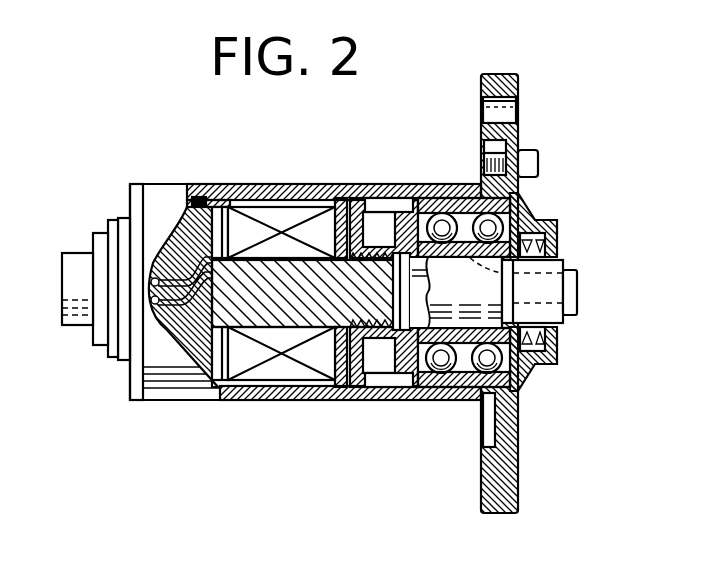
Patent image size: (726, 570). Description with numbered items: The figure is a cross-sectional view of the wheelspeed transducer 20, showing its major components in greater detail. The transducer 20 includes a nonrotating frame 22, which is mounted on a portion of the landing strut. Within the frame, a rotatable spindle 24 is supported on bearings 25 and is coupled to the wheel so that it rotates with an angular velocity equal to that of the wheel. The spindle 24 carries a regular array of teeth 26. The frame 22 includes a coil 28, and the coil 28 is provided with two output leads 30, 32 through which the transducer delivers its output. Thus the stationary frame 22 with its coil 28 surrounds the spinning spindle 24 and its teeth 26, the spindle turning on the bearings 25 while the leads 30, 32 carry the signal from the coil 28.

The wheelspeed transducer 20 is at (274, 166).
The nonrotating frame 22 is at (342, 183).
The rotatable spindle 24 is at (578, 293).
The bearings 25 is at (487, 360).
The teeth 26 is at (406, 190).
The coil 28 is at (283, 365).
The output lead 30 is at (162, 252).
The output lead 32 is at (174, 248).